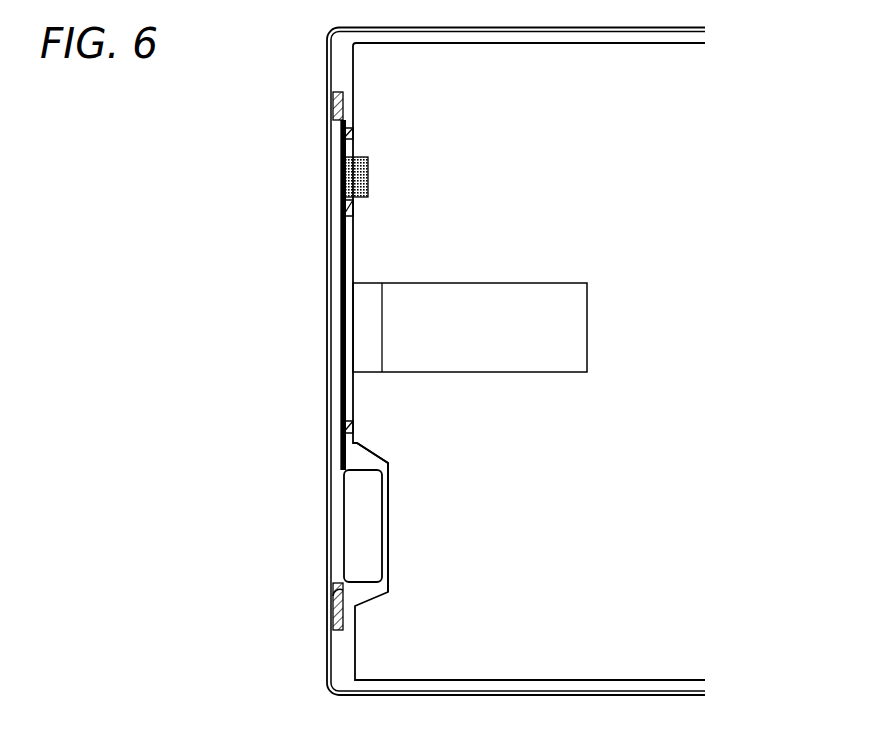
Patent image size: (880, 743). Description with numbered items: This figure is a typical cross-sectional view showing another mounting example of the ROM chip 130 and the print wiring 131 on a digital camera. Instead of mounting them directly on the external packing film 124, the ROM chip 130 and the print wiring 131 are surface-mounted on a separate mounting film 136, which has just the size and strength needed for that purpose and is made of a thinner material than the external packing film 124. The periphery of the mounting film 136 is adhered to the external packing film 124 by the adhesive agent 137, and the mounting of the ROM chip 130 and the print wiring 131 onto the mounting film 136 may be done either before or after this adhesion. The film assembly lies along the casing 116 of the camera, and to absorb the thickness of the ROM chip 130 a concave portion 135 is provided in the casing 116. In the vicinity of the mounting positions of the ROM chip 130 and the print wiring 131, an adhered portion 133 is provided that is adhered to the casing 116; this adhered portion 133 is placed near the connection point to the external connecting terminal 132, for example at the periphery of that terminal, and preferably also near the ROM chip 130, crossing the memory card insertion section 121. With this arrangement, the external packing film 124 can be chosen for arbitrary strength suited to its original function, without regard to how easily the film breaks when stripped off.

The casing 116 is at (360, 655).
The memory card insertion section 121 is at (366, 310).
The external packing film 124 is at (331, 455).
The ROM chip 130 is at (363, 534).
The print wiring 131 is at (344, 320).
The external connecting terminal 132 is at (368, 160).
The adhered portion 133 is at (354, 128).
The concave portion 135 is at (380, 459).
The mounting film 136 is at (333, 588).
The adhesive agent 137 is at (333, 93).